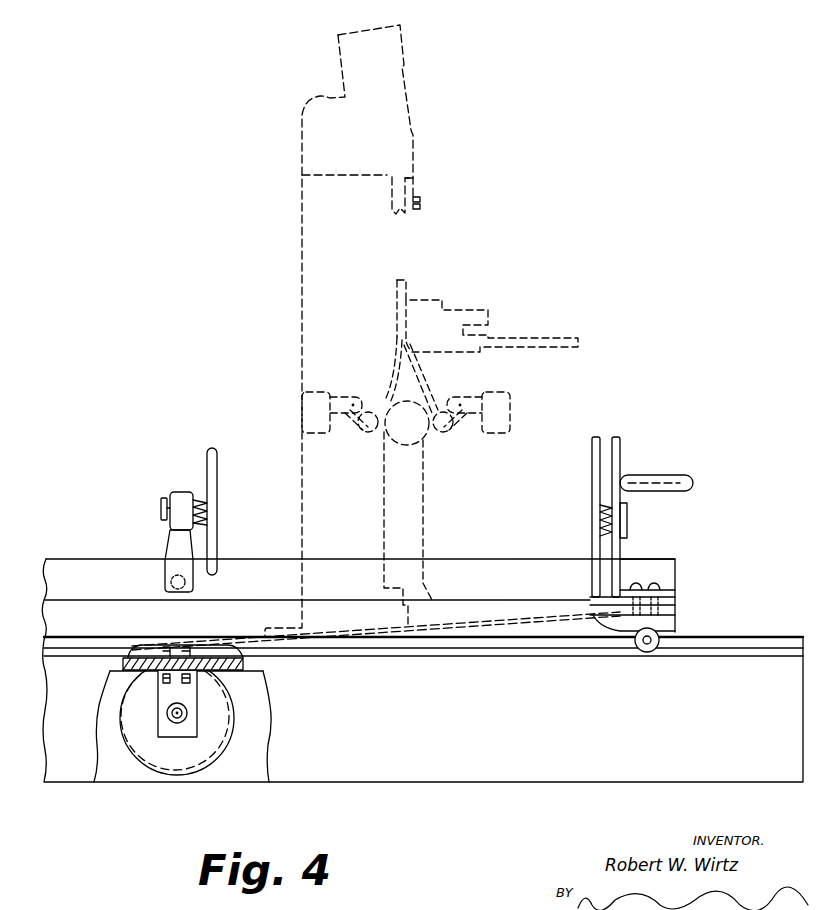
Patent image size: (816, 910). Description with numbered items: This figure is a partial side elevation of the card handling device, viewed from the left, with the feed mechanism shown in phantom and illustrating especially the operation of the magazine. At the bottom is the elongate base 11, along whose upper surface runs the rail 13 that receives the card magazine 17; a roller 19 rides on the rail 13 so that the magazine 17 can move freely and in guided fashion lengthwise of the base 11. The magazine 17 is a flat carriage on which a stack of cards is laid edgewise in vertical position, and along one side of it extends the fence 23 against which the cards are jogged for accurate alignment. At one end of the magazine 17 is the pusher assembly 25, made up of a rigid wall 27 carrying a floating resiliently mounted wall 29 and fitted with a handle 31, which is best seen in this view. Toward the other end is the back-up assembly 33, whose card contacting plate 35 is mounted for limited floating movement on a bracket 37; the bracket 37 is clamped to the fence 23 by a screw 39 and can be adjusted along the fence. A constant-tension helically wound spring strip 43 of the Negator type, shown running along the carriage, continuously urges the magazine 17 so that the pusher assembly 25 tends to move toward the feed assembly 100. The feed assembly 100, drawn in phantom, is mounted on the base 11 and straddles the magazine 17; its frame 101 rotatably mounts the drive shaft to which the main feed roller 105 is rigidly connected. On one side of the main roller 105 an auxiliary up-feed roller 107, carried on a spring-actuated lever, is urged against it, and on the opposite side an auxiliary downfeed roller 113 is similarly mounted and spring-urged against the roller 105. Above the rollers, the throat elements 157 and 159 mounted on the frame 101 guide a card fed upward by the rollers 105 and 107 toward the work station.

The base 11 is at (442, 775).
The rail 13 is at (742, 634).
The card magazine 17 is at (636, 546).
The roller 19 is at (646, 652).
The fence 23 is at (445, 558).
The pusher assembly 25 is at (614, 506).
The rigid wall 27 is at (622, 468).
The floating resiliently mounted wall 29 is at (592, 480).
The handle 31 is at (695, 483).
The back-up assembly 33 is at (202, 481).
The card contacting plate 35 is at (218, 462).
The bracket 37 is at (172, 545).
The screw 39 is at (186, 582).
The constant-tension helically wound spring strip 43 is at (470, 628).
The feed assembly 100 is at (421, 196).
The frame 101 is at (312, 229).
The main feed roller 105 is at (392, 447).
The auxiliary up-feed roller 107 is at (453, 436).
The auxiliary downfeed roller 113 is at (362, 432).
The throat element 157 is at (420, 380).
The throat element 159 is at (392, 375).